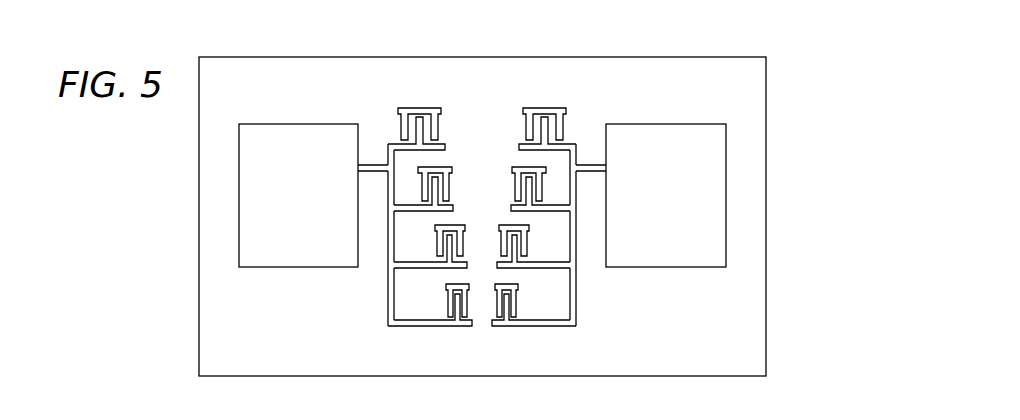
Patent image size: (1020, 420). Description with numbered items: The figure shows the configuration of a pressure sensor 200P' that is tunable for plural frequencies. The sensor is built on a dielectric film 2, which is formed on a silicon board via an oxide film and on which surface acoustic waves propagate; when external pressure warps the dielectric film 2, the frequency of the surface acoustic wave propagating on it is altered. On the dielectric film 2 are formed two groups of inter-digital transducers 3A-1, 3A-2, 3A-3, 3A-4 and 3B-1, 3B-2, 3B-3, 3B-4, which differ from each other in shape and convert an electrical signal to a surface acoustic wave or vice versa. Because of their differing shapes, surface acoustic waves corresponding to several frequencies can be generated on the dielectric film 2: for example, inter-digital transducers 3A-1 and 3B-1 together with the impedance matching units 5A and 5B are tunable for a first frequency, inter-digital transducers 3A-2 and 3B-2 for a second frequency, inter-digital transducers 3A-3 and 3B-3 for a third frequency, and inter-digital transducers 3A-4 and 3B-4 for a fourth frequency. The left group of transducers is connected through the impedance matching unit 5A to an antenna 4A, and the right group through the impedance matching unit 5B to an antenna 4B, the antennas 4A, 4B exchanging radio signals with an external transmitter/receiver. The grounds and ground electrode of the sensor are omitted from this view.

The pressure sensor 200P' is at (126, 207).
The dielectric film 2 is at (767, 107).
The antenna 4A is at (283, 124).
The antenna 4B is at (650, 124).
The impedance matching unit 5A is at (373, 165).
The impedance matching unit 5B is at (587, 165).
The inter-digital transducer 3A-1 is at (405, 108).
The inter-digital transducer 3A-2 is at (450, 166).
The inter-digital transducer 3A-3 is at (461, 225).
The inter-digital transducer 3A-4 is at (455, 326).
The inter-digital transducer 3B-1 is at (559, 108).
The inter-digital transducer 3B-2 is at (511, 166).
The inter-digital transducer 3B-3 is at (516, 268).
The inter-digital transducer 3B-4 is at (507, 326).